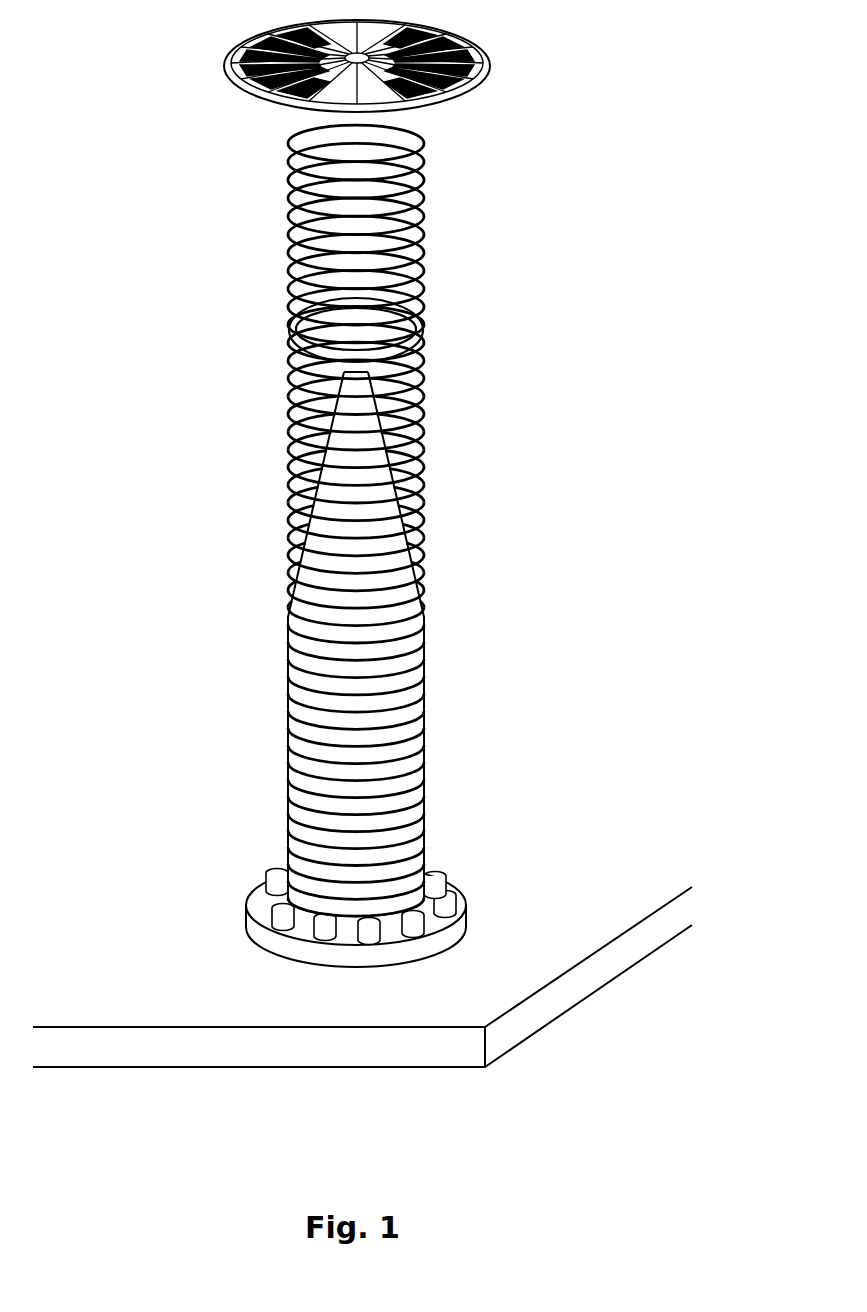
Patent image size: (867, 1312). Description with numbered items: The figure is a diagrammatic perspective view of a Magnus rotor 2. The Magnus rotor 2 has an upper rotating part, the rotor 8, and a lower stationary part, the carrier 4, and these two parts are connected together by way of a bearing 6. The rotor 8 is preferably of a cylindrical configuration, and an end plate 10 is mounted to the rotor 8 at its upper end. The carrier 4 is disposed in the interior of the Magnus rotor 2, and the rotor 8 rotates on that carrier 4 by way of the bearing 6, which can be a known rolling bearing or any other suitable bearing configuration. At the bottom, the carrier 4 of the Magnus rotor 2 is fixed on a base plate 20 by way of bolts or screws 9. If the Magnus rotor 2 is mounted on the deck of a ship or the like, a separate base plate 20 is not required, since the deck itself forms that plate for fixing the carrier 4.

The Magnus rotor 2 is at (572, 147).
The carrier 4 is at (396, 591).
The bearing 6 is at (413, 365).
The rotor 8 is at (284, 203).
The bolts or screws 9 is at (446, 890).
The end plate 10 is at (222, 68).
The base plate 20 is at (108, 975).